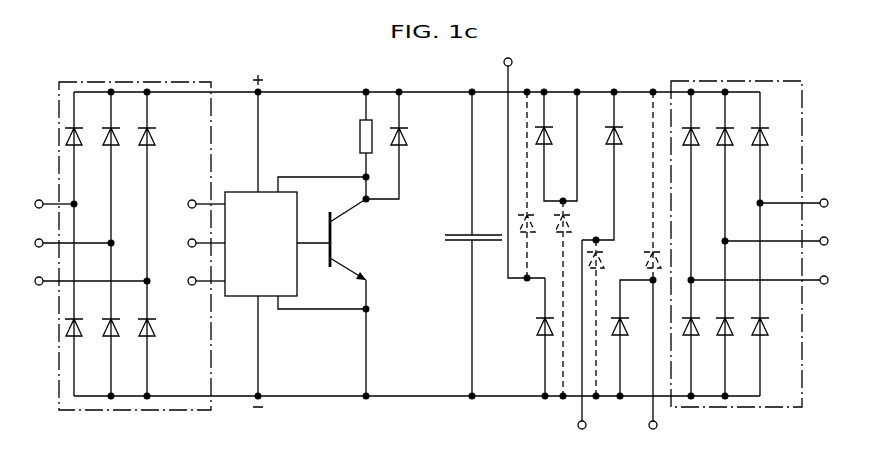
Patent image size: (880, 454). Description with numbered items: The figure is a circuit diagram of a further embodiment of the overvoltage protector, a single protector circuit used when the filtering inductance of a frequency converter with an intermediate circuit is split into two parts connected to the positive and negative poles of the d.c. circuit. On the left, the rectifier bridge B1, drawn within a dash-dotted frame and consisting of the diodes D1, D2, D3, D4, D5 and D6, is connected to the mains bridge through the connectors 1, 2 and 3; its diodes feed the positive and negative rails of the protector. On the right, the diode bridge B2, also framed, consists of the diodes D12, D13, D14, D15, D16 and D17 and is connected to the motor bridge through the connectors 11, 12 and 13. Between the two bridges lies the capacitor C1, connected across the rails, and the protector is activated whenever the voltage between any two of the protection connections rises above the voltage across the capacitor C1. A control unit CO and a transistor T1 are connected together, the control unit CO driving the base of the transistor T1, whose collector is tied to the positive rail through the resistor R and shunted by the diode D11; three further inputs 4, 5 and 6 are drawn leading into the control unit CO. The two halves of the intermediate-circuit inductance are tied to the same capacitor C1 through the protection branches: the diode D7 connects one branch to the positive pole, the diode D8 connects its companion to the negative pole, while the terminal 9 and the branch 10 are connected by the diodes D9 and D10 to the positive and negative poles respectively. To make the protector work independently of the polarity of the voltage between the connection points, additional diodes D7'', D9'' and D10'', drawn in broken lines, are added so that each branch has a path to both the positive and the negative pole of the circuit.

The rectifier bridge B1 is at (135, 228).
The diode bridge B2 is at (736, 225).
The diode D1 is at (80, 148).
The diode D2 is at (81, 300).
The diode D3 is at (118, 166).
The diode D4 is at (118, 321).
The diode D5 is at (153, 185).
The diode D6 is at (346, 339).
The diode D7 is at (558, 147).
The diode D8 is at (534, 184).
The diode D9 is at (610, 166).
The diode D10 is at (632, 340).
The diode D11 is at (397, 144).
The diode D12 is at (700, 185).
The diode D13 is at (700, 340).
The diode D14 is at (734, 165).
The diode D15 is at (734, 320).
The diode D16 is at (770, 147).
The diode D17 is at (770, 299).
The additional diode D7'' is at (582, 300).
The additional diode D9'' is at (610, 320).
The additional diode D10'' is at (643, 186).
The resistor R is at (359, 133).
The transistor T1 is at (324, 288).
The capacitor C1 is at (473, 244).
The control unit CO is at (297, 241).
The connector 1 is at (50, 205).
The connector 2 is at (68, 244).
The connector 3 is at (86, 282).
The control input terminal 4 is at (200, 205).
The control input terminal 5 is at (200, 244).
The control input terminal 6 is at (200, 282).
The terminal 9 is at (589, 338).
The branch 10 is at (664, 358).
The connector 11 is at (803, 204).
The connector 12 is at (786, 242).
The connector 13 is at (769, 281).